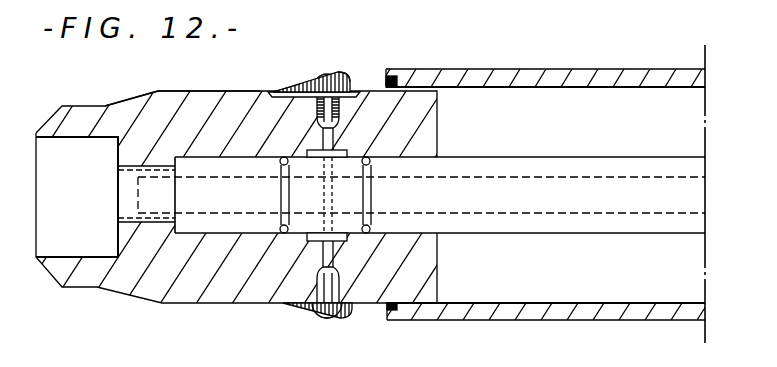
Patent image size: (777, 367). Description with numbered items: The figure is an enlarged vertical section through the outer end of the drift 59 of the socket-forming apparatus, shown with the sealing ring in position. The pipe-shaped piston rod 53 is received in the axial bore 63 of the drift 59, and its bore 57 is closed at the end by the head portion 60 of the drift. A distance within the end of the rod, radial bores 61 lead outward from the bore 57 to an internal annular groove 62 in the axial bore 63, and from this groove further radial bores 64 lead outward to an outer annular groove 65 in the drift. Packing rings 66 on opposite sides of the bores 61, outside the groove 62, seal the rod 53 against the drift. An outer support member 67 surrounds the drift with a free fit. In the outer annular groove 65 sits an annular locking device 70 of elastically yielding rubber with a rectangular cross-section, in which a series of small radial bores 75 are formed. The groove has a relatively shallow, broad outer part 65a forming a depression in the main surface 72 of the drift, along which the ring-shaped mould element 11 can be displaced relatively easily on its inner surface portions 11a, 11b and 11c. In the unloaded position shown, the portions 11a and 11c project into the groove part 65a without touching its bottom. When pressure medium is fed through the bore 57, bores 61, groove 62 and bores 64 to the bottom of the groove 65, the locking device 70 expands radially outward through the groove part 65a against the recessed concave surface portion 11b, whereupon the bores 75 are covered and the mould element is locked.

The mould element 11 is at (325, 323).
The inner surface portion 11a is at (305, 90).
The recessed concave inner surface portion 11b is at (333, 306).
The inner surface portion 11c is at (349, 78).
The piston rod 53 is at (535, 167).
The bore 57 is at (593, 178).
The drift 59 is at (227, 303).
The head portion 60 is at (93, 243).
The radial bores 61 is at (319, 160).
The internal annular groove 62 is at (283, 156).
The axial bore 63 is at (158, 92).
The radial bores 64 is at (330, 140).
The outer annular groove 65 is at (324, 193).
The outer part of the annular groove 65a is at (287, 88).
The packing rings 66 is at (278, 233).
The outer support member 67 is at (488, 320).
The locking device 70 is at (325, 292).
The main surface 72 is at (200, 91).
The radial bores 75 is at (322, 107).